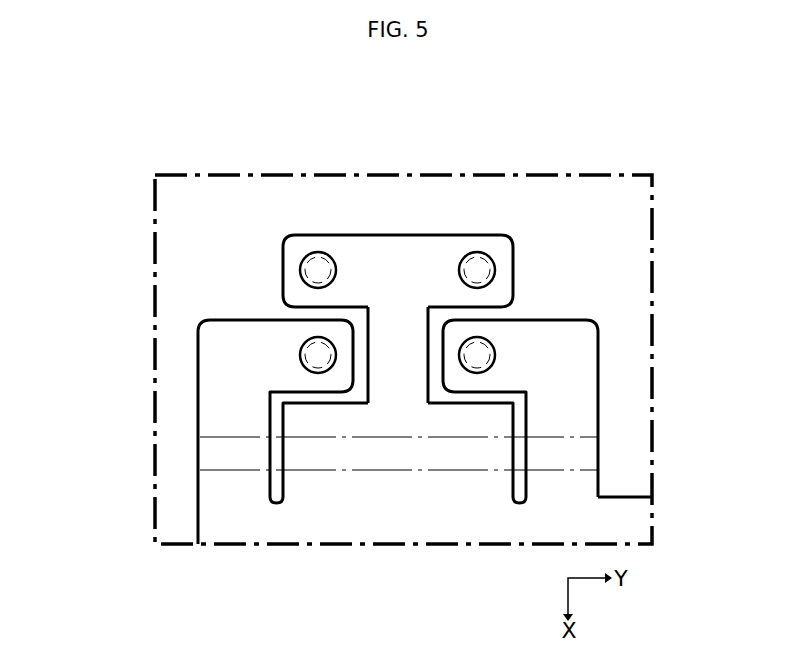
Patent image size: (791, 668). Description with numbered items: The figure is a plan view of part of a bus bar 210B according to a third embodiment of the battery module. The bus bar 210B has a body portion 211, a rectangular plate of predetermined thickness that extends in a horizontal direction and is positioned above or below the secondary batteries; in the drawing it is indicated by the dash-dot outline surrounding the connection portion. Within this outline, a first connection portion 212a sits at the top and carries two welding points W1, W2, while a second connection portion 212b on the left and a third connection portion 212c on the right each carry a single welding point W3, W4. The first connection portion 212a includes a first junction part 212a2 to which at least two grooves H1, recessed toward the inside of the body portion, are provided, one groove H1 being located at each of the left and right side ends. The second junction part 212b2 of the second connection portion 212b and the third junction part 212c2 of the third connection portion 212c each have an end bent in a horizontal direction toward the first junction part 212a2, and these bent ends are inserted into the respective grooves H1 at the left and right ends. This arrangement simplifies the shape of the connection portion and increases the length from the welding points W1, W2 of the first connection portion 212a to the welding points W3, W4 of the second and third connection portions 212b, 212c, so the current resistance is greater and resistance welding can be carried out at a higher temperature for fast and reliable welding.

The bus bar 210B is at (270, 228).
The body portion 211 is at (638, 523).
The first connection portion 212a is at (398, 203).
The first junction part 212a2 is at (393, 250).
The second connection portion 212b is at (191, 426).
The second junction part 212b2 is at (223, 351).
The third connection portion 212c is at (603, 405).
The third junction part 212c2 is at (573, 351).
The welding point W1 is at (321, 264).
The welding point W2 is at (475, 264).
The welding point W3 is at (310, 355).
The welding point W4 is at (486, 355).
The groove H1 is at (366, 366).